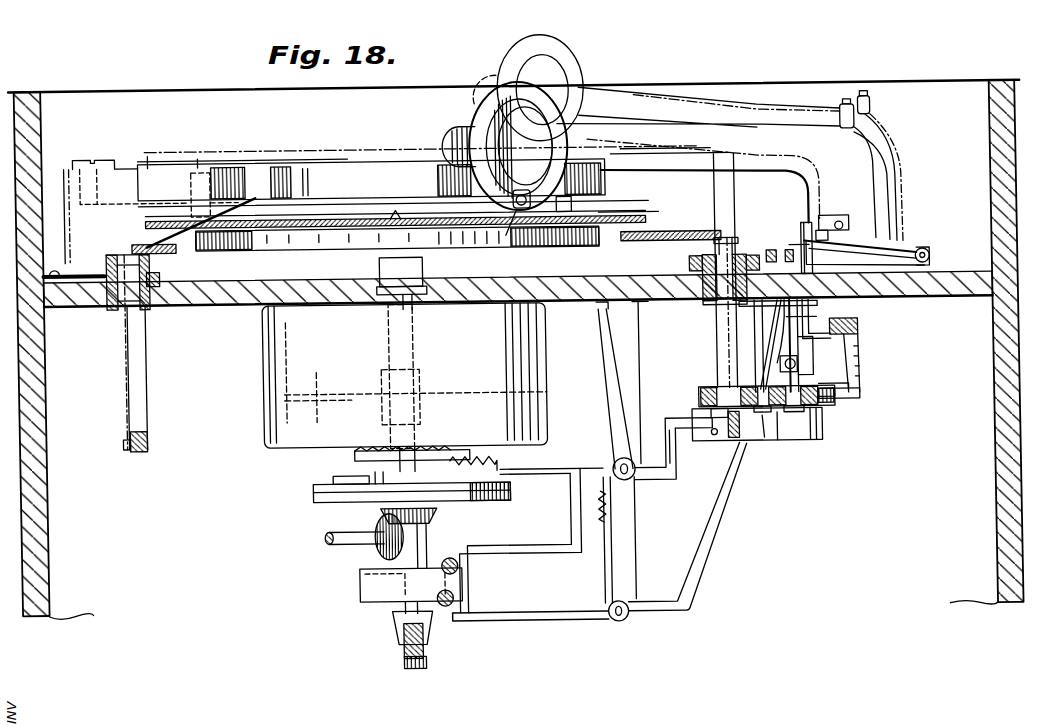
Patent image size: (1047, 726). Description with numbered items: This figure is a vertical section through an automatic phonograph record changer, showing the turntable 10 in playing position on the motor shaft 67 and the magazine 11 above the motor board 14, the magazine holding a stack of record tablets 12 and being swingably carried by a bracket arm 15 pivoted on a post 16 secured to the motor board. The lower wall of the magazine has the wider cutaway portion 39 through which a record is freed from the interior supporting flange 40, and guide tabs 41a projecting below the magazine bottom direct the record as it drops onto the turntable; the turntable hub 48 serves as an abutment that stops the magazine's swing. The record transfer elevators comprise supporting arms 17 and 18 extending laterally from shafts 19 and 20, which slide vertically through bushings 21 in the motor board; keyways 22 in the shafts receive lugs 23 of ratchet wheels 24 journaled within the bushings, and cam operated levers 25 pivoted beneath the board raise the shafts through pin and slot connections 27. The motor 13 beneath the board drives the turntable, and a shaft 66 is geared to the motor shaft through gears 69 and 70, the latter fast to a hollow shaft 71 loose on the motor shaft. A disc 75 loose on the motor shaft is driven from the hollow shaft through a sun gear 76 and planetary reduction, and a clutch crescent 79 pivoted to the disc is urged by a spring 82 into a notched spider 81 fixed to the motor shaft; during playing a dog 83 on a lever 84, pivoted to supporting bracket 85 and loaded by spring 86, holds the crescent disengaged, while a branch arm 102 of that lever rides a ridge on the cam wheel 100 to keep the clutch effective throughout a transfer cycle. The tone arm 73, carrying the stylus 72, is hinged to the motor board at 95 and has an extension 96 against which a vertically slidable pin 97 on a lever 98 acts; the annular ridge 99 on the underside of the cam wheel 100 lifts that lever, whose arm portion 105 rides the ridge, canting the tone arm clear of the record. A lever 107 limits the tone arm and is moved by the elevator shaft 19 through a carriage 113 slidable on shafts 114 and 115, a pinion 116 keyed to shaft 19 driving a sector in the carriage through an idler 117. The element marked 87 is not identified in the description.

The turntable 10 is at (586, 246).
The magazine 11 is at (340, 160).
The record tablets 12 is at (630, 215).
The motor 13 is at (266, 433).
The motor board 14 is at (950, 292).
The bracket arm 15 is at (183, 168).
The post 16 is at (91, 155).
The supporting arm 17 is at (672, 235).
The supporting arm 18 is at (150, 240).
The elevator shaft 19 is at (705, 253).
The elevator shaft 20 is at (125, 250).
The bushings 21 is at (113, 305).
The keyways 22 is at (125, 386).
The lugs 23 is at (130, 302).
The ratchet wheels 24 is at (160, 273).
The cam operated levers 25 is at (136, 447).
The pin and slot connections 27 is at (147, 437).
The cutaway portion 39 is at (354, 214).
The supporting flange 40 is at (312, 210).
The guide tabs 41a is at (212, 170).
The turntable hub 48 is at (395, 285).
The shaft 66 is at (333, 542).
The motor shaft 67 is at (420, 446).
The gear 69 is at (371, 522).
The gear 70 is at (432, 511).
The hollow shaft 71 is at (422, 538).
The stylus 72 is at (520, 208).
The tone arm 73 is at (803, 135).
The disc 75 is at (308, 484).
The sun gear 76 is at (460, 504).
The clutch crescent 79 is at (333, 476).
The spider 81 is at (382, 447).
The spring 82 is at (494, 460).
The dog 83 is at (541, 475).
The lever 84 is at (650, 469).
The supporting bracket 85 is at (637, 363).
The spring 86 is at (592, 507).
The connecting link 87 is at (666, 420).
The hinge 95 is at (929, 253).
The extension 96 is at (802, 246).
The pin 97 is at (768, 254).
The lever 98 is at (708, 545).
The annular ridge 99 is at (358, 602).
The cam wheel 100 is at (356, 578).
The branch arm 102 is at (530, 548).
The arm portion 105 is at (524, 621).
The lever 107 is at (859, 371).
The carriage 113 is at (822, 408).
The shaft 114 is at (776, 356).
The shaft 115 is at (812, 362).
The pinion 116 is at (705, 399).
The idler 117 is at (777, 444).